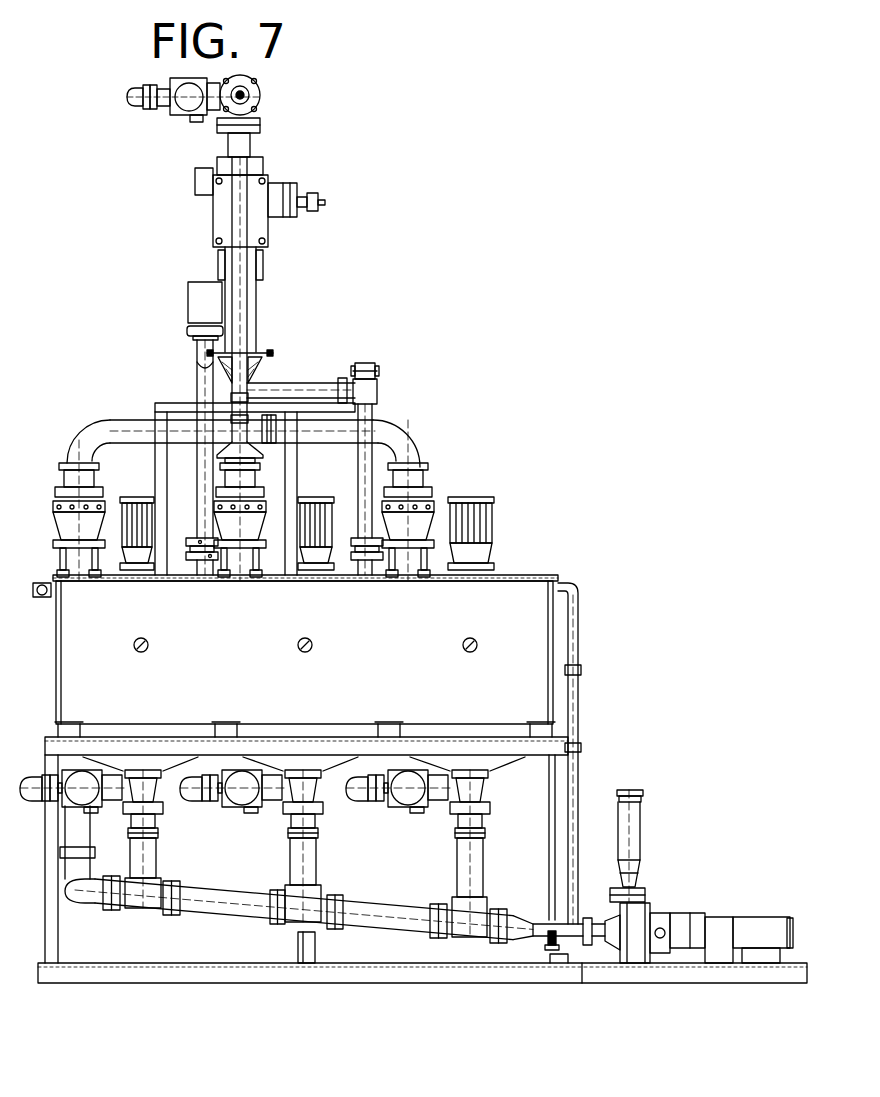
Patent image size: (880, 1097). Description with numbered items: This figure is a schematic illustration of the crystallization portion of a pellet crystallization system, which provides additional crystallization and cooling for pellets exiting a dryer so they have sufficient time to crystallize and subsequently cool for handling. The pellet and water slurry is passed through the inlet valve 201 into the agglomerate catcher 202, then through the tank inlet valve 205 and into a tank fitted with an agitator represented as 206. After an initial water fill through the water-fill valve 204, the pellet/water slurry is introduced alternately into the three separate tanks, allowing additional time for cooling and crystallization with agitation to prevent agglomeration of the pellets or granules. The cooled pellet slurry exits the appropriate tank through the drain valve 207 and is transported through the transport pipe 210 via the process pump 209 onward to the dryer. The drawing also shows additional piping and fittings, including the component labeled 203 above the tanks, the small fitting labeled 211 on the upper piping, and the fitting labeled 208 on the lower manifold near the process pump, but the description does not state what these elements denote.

The inlet valve 201 is at (194, 120).
The agglomerate catcher 202 is at (263, 265).
The inlet pipe 203 is at (197, 367).
The water-fill valve 204 is at (140, 470).
The tank inlet valve 205 is at (461, 500).
The agitator 206 is at (525, 533).
The drain valve 207 is at (455, 817).
The drain valve 208 is at (529, 911).
The process pump 209 is at (688, 903).
The transport pipe 210 is at (632, 788).
The vent fitting 211 is at (416, 367).